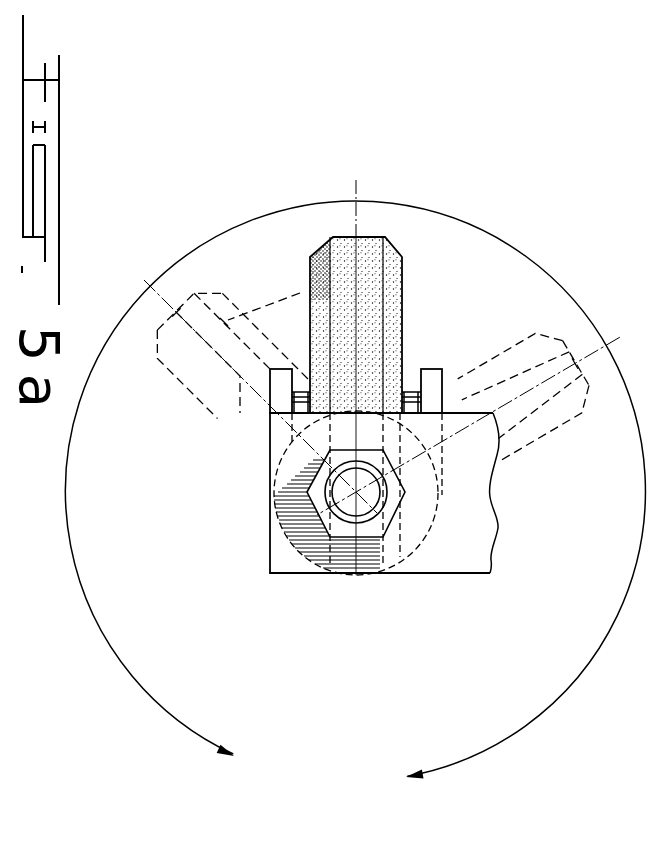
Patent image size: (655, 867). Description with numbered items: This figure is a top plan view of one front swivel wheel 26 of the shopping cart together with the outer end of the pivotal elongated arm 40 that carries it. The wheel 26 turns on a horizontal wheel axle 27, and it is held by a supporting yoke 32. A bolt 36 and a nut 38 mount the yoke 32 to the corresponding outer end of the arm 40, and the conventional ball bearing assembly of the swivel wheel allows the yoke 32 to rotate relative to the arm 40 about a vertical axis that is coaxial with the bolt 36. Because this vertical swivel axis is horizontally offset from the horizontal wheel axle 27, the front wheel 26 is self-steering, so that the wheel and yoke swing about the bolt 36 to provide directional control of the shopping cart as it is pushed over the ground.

The front wheel 26 is at (340, 317).
The horizontal wheel axle 27 is at (415, 393).
The supporting yoke 32 is at (441, 382).
The bolt 36 is at (347, 507).
The nut 38 is at (388, 515).
The elongated arm 40 is at (473, 560).